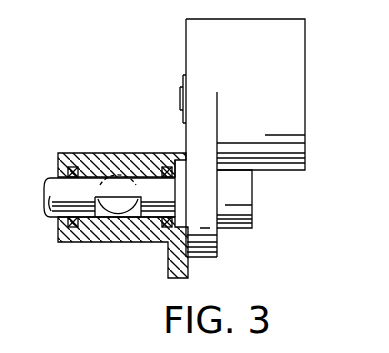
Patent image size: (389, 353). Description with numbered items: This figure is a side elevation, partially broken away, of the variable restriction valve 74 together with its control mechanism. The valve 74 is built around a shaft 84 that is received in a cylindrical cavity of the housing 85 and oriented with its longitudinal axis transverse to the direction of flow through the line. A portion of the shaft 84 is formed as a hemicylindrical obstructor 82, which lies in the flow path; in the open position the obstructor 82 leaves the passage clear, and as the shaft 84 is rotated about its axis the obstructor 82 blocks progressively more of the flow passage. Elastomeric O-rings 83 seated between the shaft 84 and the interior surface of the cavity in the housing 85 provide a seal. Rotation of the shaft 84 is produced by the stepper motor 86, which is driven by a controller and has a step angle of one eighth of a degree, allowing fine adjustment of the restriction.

The variable restriction valve 74 is at (98, 153).
The hemicylindrical obstructor 82 is at (121, 192).
The elastomeric O-rings 83 is at (73, 167).
The shaft 84 is at (46, 214).
The housing 85 is at (117, 240).
The stepper motor 86 is at (305, 57).